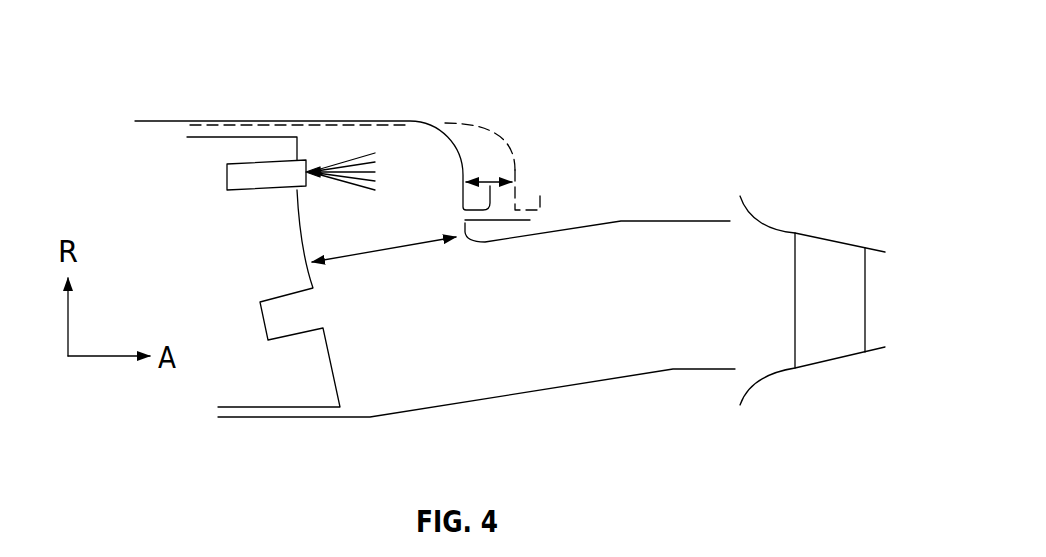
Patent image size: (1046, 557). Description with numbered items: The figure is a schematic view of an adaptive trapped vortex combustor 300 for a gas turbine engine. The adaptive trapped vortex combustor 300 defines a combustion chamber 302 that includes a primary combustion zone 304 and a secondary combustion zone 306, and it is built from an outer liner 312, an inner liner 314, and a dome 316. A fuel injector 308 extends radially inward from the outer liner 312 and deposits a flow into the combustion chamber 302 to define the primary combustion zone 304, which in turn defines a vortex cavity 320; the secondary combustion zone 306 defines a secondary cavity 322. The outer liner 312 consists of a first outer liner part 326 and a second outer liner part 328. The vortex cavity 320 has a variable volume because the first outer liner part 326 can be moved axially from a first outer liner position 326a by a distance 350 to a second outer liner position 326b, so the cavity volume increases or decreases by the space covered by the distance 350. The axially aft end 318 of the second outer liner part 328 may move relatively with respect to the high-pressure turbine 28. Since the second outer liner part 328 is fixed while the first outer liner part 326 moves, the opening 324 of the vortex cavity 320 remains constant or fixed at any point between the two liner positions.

The high-pressure turbine 28 is at (836, 228).
The adaptive trapped vortex combustor 300 is at (122, 41).
The combustion chamber 302 is at (548, 183).
The primary combustion zone 304 is at (402, 152).
The secondary combustion zone 306 is at (391, 386).
The fuel injector 308 is at (255, 190).
The outer liner 312 is at (163, 121).
The inner liner 314 is at (548, 393).
The dome 316 is at (335, 393).
The axially aft end 318 is at (718, 221).
The vortex cavity 320 is at (411, 226).
The secondary cavity 322 is at (470, 375).
The opening 324 is at (385, 248).
The first outer liner part 326 is at (277, 121).
The first outer liner position 326a is at (255, 121).
The second outer liner position 326b is at (448, 122).
The second outer liner part 328 is at (628, 221).
The distance 350 is at (491, 186).